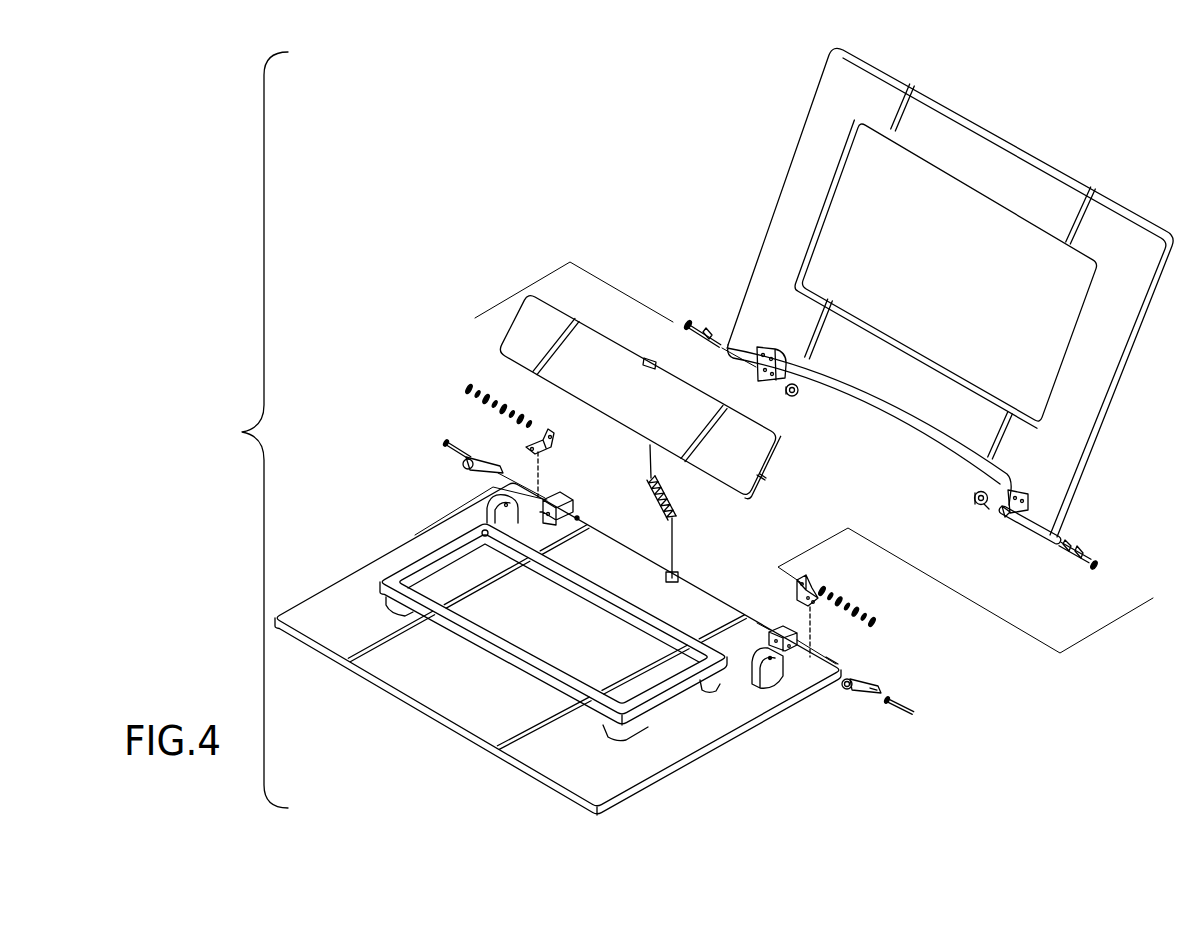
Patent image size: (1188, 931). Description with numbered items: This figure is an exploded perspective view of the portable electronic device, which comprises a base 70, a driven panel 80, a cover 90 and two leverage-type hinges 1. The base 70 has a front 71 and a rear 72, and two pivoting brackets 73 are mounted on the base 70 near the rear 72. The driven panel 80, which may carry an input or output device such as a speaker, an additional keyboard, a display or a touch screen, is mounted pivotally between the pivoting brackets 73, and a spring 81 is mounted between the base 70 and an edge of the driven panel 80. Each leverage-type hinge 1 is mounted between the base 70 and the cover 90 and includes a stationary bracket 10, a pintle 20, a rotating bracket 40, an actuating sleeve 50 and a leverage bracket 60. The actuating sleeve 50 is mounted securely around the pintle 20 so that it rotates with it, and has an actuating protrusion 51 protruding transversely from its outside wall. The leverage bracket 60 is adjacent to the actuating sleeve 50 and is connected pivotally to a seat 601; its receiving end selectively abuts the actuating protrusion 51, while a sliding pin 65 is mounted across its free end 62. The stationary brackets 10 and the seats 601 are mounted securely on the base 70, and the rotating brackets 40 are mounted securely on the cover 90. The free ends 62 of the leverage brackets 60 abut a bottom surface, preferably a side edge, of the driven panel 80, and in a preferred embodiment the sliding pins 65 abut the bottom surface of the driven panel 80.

The leverage-type hinge 1 is at (697, 306).
The stationary bracket 10 is at (803, 584).
The pintle 20 is at (1080, 548).
The rotating bracket 40 is at (1022, 499).
The actuating sleeve 50 is at (977, 493).
The actuating protrusion 51 is at (979, 510).
The leverage bracket 60 is at (889, 703).
The seat 601 is at (782, 628).
The free end 62 is at (852, 683).
The sliding pin 65 is at (845, 690).
The base 70 is at (550, 758).
The front 71 is at (438, 716).
The rear 72 is at (833, 661).
The pivoting bracket 73 is at (776, 675).
The driven panel 80 is at (520, 348).
The spring 81 is at (674, 501).
The cover 90 is at (1077, 452).